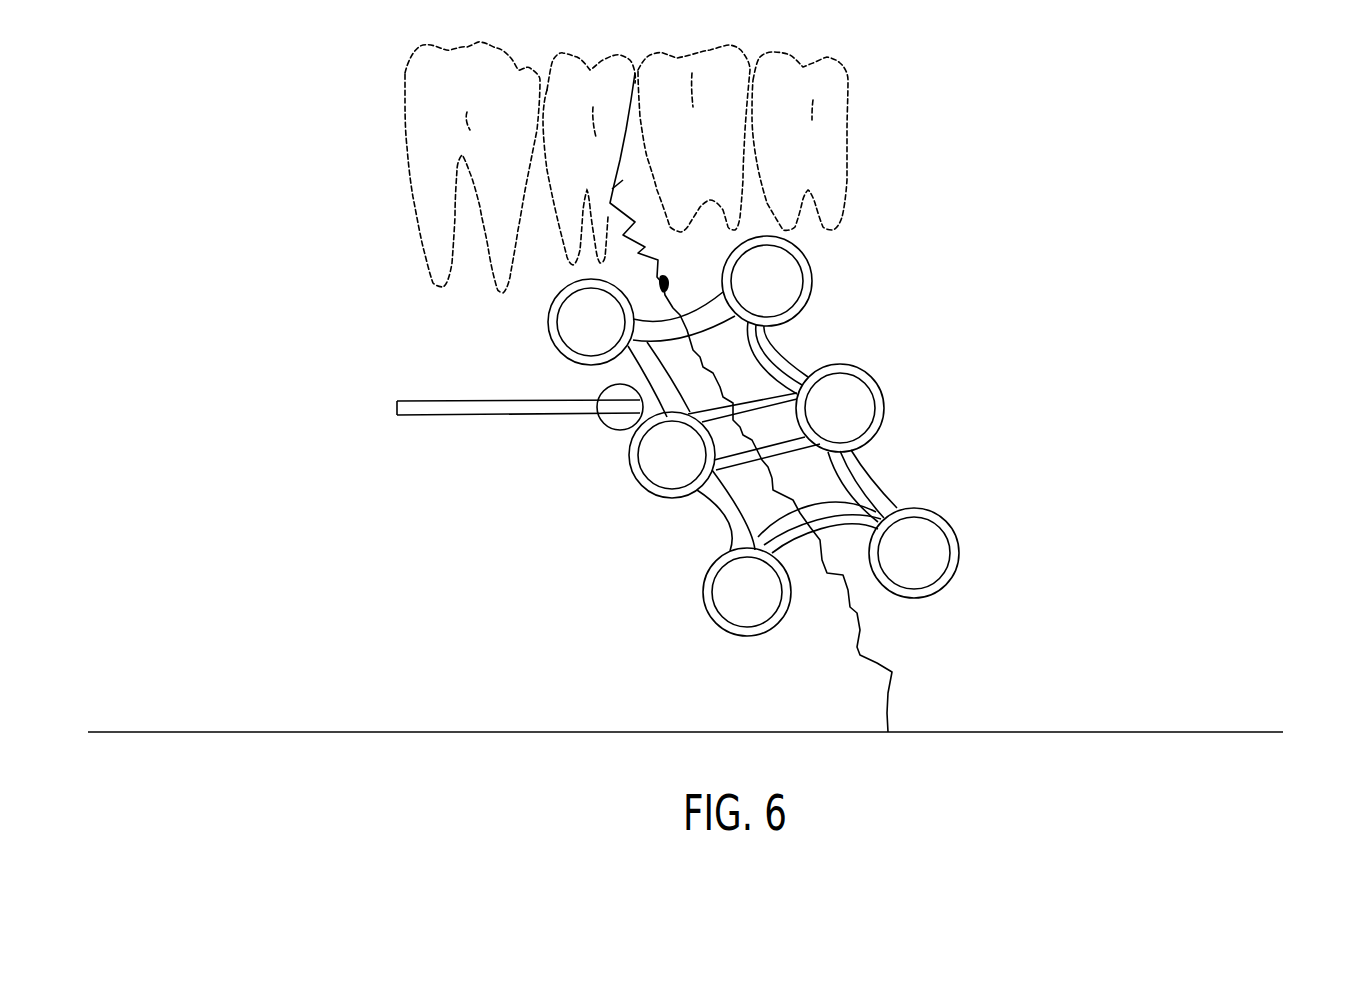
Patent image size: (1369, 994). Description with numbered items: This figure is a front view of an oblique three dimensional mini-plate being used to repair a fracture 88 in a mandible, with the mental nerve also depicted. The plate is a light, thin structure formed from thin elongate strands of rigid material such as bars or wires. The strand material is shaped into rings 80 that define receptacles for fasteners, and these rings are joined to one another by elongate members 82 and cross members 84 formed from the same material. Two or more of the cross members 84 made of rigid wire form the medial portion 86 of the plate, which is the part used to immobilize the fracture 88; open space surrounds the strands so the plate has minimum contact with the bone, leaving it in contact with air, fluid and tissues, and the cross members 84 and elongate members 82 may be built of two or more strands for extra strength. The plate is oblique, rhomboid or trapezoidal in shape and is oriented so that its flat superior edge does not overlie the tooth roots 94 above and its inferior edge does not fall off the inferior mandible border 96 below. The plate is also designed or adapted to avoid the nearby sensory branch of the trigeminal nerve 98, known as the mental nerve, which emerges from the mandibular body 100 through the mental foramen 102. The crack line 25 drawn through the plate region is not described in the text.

The crack line 25 is at (664, 279).
The ring 80 is at (703, 593).
The elongate member 82 is at (718, 518).
The cross member 84 is at (772, 383).
The medial portion 86 is at (793, 546).
The fracture 88 is at (880, 665).
The tooth roots 94 is at (849, 192).
The inferior mandible border 96 is at (1212, 730).
The trigeminal nerve sensory branch 98 is at (500, 413).
The mandibular body 100 is at (866, 436).
The mental foramen 102 is at (620, 433).